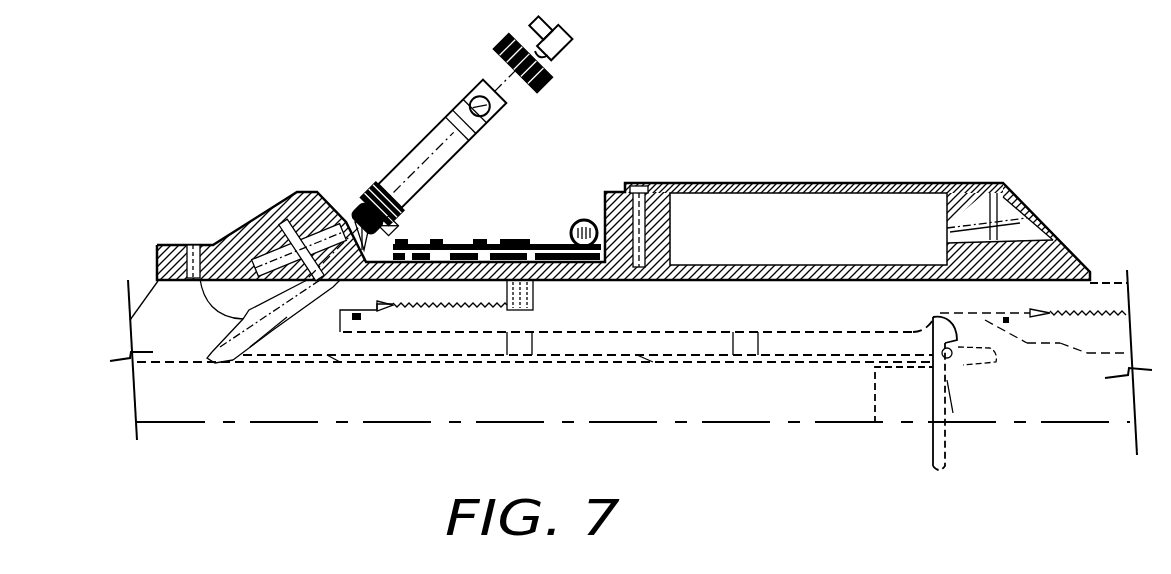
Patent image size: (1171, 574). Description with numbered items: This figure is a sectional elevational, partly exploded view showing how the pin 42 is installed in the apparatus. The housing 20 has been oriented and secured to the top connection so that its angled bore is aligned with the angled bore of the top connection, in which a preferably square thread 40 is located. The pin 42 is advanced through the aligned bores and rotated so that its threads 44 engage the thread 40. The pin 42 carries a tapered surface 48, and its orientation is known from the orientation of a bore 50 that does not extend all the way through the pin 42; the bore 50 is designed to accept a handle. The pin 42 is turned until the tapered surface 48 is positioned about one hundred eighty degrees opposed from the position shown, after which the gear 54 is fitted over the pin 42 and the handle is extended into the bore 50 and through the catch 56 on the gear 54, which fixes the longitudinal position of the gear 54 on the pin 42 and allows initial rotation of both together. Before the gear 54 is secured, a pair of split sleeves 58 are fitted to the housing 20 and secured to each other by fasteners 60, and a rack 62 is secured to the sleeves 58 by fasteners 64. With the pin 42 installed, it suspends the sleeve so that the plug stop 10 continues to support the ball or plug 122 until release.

The plug stop 10 is at (975, 393).
The housing 20 is at (172, 245).
The square thread 40 is at (193, 245).
The pin 42 is at (411, 153).
The threads 44 is at (359, 211).
The tapered surface 48 is at (357, 222).
The bore 50 is at (470, 101).
The gear 54 is at (549, 82).
The catch 56 is at (543, 45).
The split sleeves 58 is at (558, 246).
The fasteners 60 is at (455, 243).
The rack 62 is at (384, 232).
The fasteners 64 is at (406, 245).
The ball or plug 122 is at (875, 387).